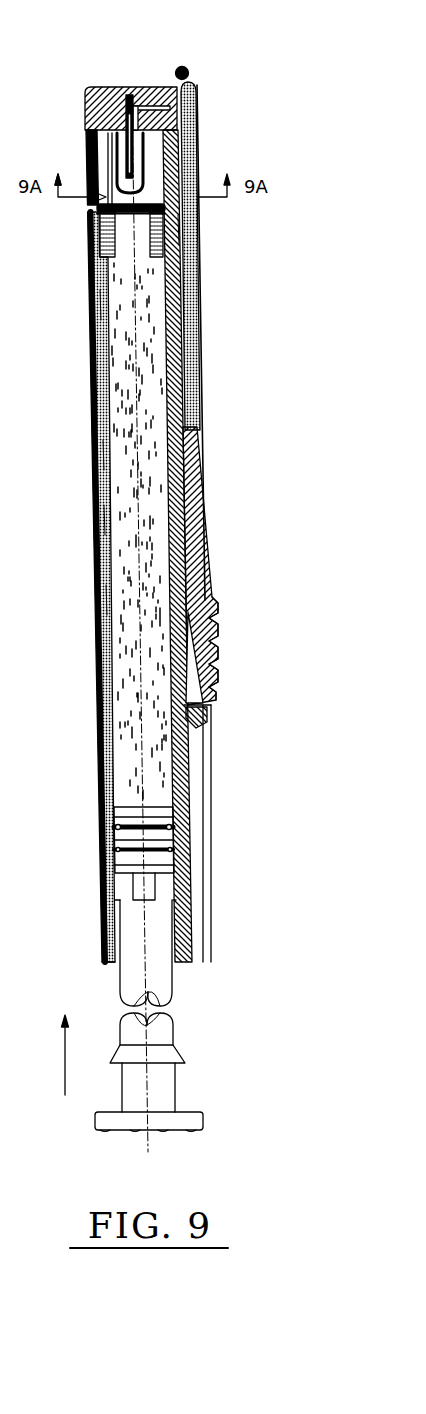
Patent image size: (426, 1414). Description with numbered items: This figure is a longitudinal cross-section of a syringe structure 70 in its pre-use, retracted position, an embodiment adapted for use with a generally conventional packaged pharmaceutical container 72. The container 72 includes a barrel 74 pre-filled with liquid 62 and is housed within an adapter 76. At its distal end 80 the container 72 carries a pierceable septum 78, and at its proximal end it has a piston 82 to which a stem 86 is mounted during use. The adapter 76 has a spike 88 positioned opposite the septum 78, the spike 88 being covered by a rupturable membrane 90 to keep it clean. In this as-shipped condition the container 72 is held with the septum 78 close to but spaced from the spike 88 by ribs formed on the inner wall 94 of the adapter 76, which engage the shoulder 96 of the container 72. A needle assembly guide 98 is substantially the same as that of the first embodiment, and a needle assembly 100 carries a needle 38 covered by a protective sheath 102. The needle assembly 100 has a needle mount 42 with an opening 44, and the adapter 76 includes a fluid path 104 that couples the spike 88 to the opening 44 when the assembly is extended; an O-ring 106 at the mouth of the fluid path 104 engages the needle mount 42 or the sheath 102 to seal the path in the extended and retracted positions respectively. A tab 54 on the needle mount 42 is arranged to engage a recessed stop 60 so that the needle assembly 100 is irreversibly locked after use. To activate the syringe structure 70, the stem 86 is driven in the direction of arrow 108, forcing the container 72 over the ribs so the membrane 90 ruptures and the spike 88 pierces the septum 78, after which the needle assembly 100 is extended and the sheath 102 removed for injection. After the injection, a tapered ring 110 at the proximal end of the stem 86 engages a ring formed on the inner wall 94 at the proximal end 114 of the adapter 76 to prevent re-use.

The needle 38 is at (200, 287).
The needle mount 42 is at (197, 537).
The opening 44 is at (197, 428).
The tab 54 is at (190, 728).
The recessed stop 60 is at (203, 700).
The liquid 62 is at (92, 518).
The syringe structure 70 is at (222, 134).
The packaged pharmaceutical container 72 is at (88, 388).
The barrel 74 is at (88, 455).
The adapter 76 is at (92, 597).
The pierceable septum 78 is at (83, 262).
The distal end 80 is at (88, 303).
The piston 82 is at (118, 855).
The stem 86 is at (163, 978).
The spike 88 is at (112, 168).
The rupturable membrane 90 is at (115, 155).
The inner wall 94 is at (88, 207).
The shoulder 96 is at (185, 230).
The needle assembly guide 98 is at (203, 337).
The needle assembly 100 is at (212, 602).
The protective sheath 102 is at (188, 72).
The fluid path 104 is at (132, 87).
The O-ring 106 is at (162, 87).
The arrow 108 is at (63, 1084).
The tapered ring 110 is at (170, 1053).
The proximal end 114 is at (100, 948).